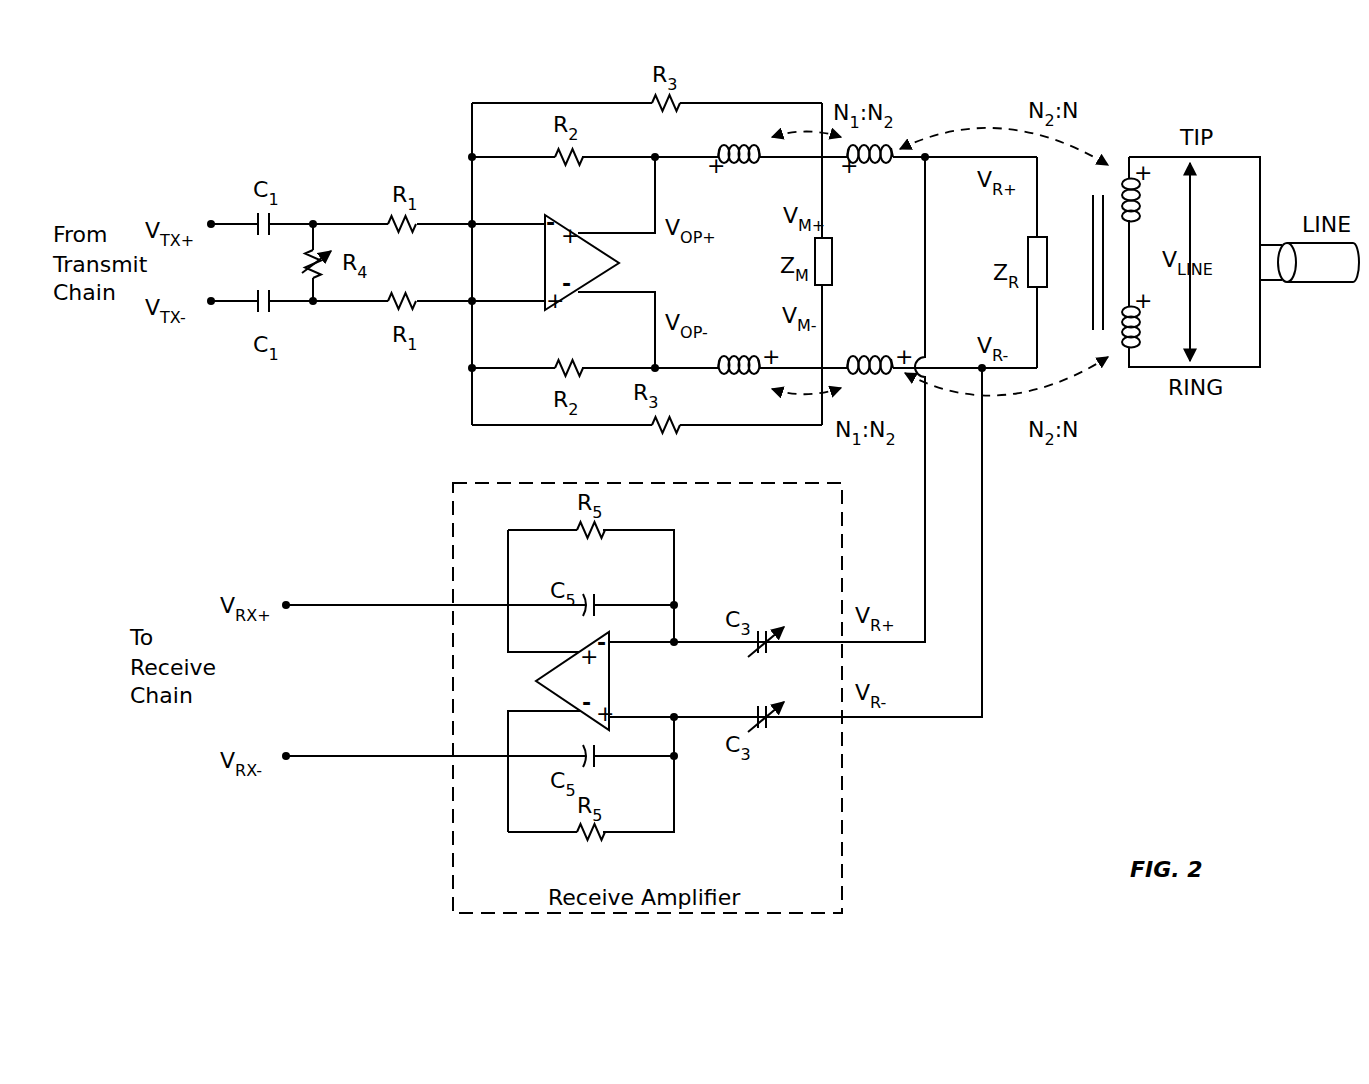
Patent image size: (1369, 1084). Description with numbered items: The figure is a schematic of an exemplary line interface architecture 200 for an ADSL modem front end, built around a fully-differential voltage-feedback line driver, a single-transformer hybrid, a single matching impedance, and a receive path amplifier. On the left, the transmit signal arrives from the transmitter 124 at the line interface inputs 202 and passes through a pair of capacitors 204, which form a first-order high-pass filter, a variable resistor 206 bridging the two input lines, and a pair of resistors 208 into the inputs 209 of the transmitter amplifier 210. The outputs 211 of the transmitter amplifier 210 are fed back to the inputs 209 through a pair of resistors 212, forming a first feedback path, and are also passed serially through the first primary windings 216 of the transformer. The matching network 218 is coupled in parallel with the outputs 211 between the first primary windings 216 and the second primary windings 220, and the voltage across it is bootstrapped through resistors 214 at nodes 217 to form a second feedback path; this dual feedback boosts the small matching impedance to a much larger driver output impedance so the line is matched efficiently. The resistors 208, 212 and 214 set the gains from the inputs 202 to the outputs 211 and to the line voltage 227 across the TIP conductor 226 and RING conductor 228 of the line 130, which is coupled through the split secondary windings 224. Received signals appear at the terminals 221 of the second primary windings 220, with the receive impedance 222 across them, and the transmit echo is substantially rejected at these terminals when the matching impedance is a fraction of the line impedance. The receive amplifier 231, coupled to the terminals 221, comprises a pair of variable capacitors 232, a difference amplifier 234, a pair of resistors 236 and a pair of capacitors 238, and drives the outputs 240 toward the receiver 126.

The transmitter 124 is at (74, 322).
The receiver 126 is at (151, 725).
The line 130 is at (1308, 272).
The line interface architecture 200 is at (1142, 802).
The line interface inputs 202 is at (220, 214).
The capacitors 204 is at (273, 212).
The variable resistor 206 is at (291, 264).
The resistors 208 is at (403, 238).
The inputs 209 is at (516, 228).
The transmitter amplifier 210 is at (582, 262).
The outputs 211 is at (685, 214).
The resistors 212 is at (570, 172).
The resistors 214 is at (668, 115).
The first primary windings 216 is at (744, 146).
The nodes 217 is at (805, 210).
The matching network 218 is at (833, 265).
The second primary windings 220 is at (870, 172).
The terminals 221 is at (1005, 196).
The receive impedance 222 is at (1032, 254).
The secondary windings 224 is at (1153, 262).
The TIP conductor 226 is at (1192, 124).
The line voltage 227 is at (1195, 250).
The RING conductor 228 is at (1195, 400).
The receive amplifier 231 is at (828, 906).
The variable capacitors 232 is at (762, 627).
The difference amplifier 234 is at (572, 681).
The resistors 236 is at (575, 522).
The capacitors 238 is at (593, 597).
The outputs 240 is at (283, 597).